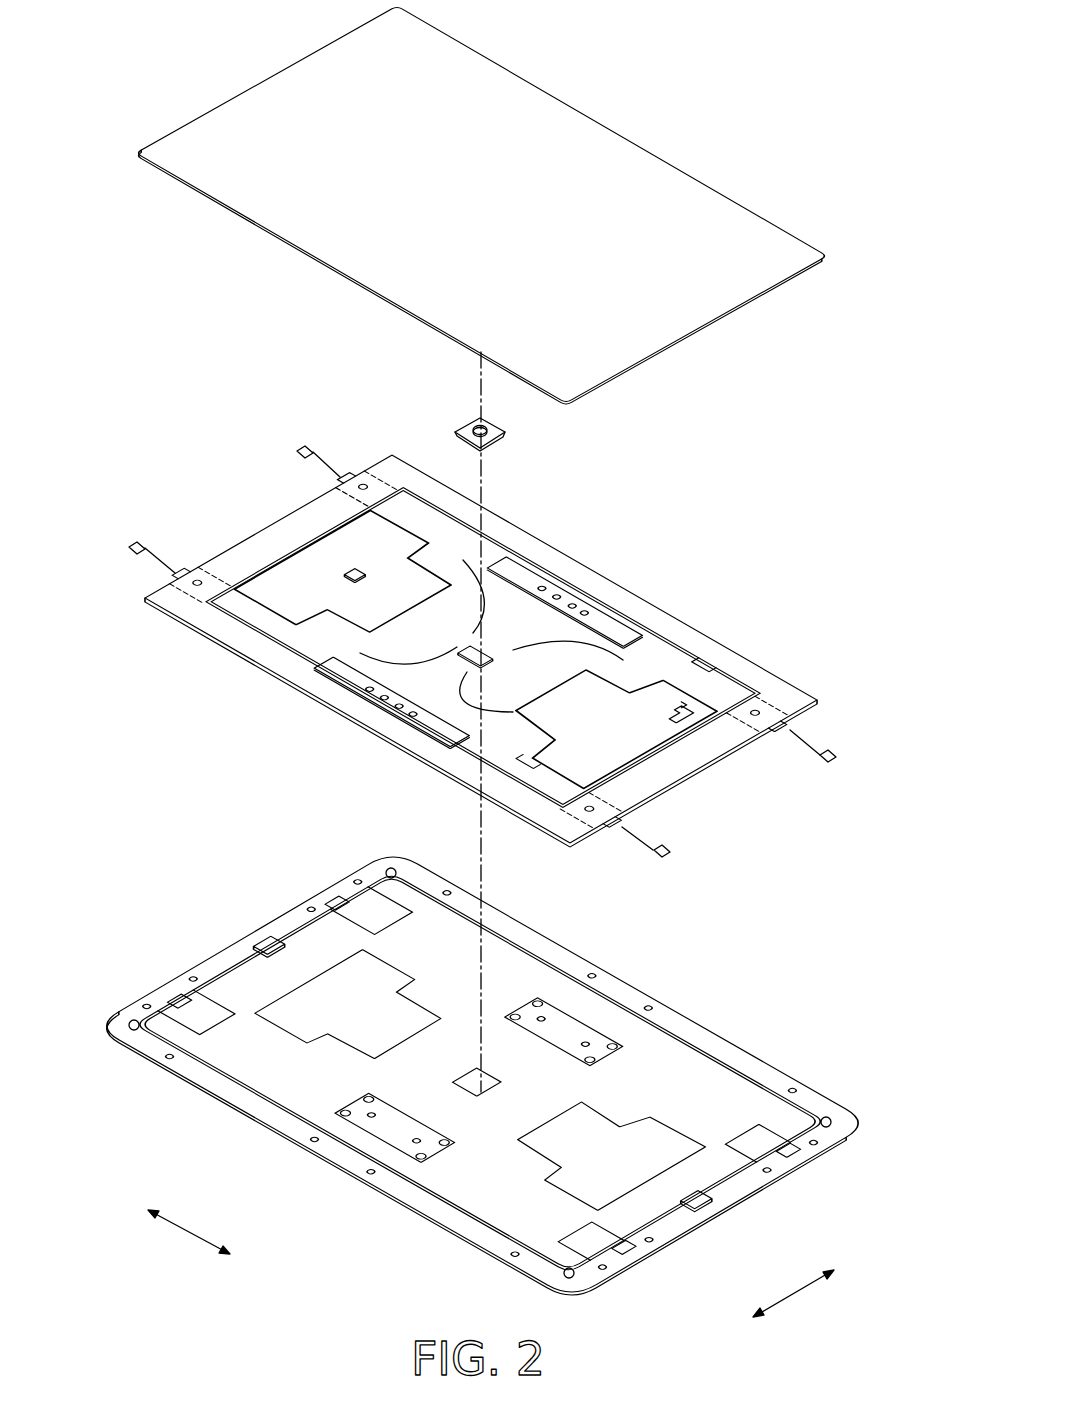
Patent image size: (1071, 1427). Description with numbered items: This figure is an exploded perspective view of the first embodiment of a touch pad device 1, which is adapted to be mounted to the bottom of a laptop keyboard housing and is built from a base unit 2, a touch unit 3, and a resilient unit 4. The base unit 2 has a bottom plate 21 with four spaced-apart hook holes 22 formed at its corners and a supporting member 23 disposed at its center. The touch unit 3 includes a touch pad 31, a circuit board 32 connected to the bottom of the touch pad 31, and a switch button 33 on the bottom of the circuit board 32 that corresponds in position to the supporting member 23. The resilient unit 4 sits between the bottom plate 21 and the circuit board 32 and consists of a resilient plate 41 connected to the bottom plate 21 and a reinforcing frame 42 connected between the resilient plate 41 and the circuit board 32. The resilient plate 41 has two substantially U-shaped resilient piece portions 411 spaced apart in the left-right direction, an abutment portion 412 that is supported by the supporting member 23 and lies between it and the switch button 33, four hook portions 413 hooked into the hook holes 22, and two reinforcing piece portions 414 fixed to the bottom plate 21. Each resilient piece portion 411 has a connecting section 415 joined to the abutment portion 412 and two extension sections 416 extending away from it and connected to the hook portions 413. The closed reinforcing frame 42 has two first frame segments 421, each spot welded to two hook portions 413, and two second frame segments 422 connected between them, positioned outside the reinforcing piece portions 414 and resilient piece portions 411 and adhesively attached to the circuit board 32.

The touch pad device 1 is at (818, 480).
The base unit 2 is at (824, 1090).
The bottom plate 21 is at (735, 1093).
The hook holes 22 is at (338, 900).
The supporting member 23 is at (475, 1098).
The touch unit 3 is at (748, 312).
The touch pad 31 is at (716, 216).
The circuit board 32 is at (690, 337).
The switch button 33 is at (505, 432).
The resilient unit 4 is at (724, 690).
The resilient plate 41 is at (395, 650).
The resilient piece portions 411 is at (425, 517).
The abutment portion 412 is at (500, 643).
The hook portions 413 is at (348, 475).
The reinforcing piece portions 414 is at (525, 580).
The connecting section 415 is at (513, 672).
The extension sections 416 is at (705, 668).
The reinforcing frame 42 is at (693, 632).
The first frame segments 421 is at (270, 540).
The second frame segments 422 is at (710, 648).